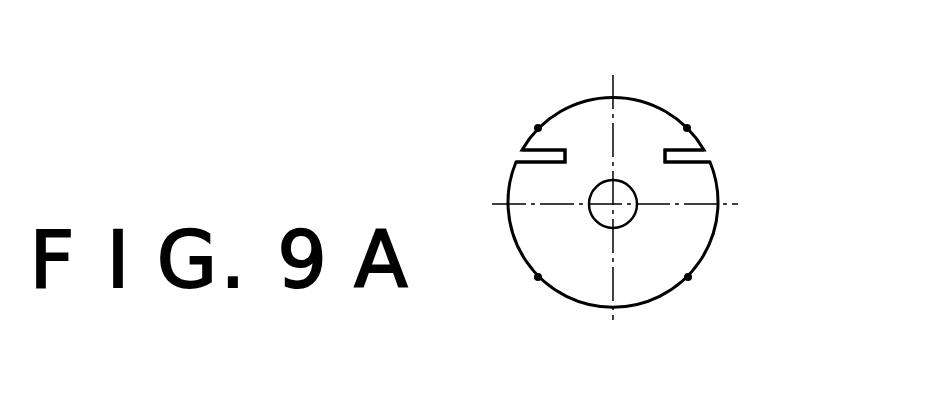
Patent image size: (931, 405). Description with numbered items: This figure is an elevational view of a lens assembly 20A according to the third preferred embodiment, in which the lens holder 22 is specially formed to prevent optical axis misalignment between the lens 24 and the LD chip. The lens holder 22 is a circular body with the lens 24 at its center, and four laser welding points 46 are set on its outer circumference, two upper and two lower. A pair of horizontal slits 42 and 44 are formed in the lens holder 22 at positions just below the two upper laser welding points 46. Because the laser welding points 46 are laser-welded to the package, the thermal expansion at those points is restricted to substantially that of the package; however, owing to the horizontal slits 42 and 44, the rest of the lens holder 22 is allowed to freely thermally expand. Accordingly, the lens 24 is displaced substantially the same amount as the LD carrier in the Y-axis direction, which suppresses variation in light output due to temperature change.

The lens assembly 20A is at (638, 95).
The lens holder 22 is at (713, 237).
The lens 24 is at (612, 220).
The horizontal slit 42 is at (522, 156).
The horizontal slit 44 is at (703, 156).
The laser welding points 46 is at (533, 125).